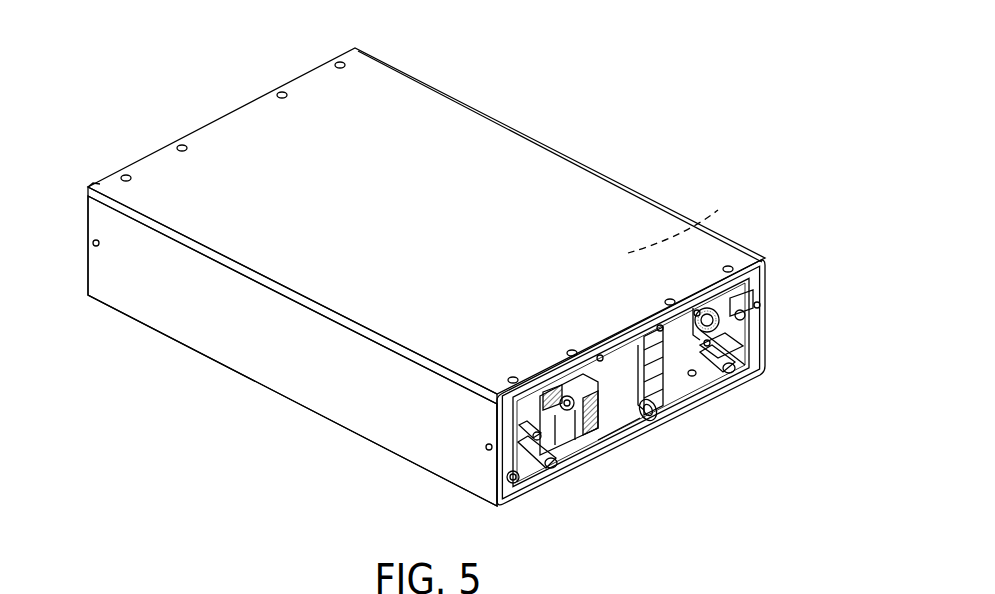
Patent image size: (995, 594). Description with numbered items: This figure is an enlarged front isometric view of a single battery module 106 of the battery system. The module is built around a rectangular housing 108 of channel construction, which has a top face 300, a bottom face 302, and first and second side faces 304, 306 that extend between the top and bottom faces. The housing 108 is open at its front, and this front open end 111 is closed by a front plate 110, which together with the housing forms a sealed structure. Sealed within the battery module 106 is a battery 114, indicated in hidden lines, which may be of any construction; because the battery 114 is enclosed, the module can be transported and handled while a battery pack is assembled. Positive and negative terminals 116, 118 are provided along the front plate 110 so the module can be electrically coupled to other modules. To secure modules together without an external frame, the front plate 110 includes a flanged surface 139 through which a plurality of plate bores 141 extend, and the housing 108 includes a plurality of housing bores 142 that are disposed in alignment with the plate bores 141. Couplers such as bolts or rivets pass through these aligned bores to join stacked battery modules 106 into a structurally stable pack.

The battery module 106 is at (690, 144).
The rectangular housing 108 is at (326, 363).
The front plate 110 is at (618, 377).
The front open end 111 is at (770, 373).
The battery 114 is at (695, 225).
The positive terminal 116 is at (743, 327).
The negative terminal 118 is at (588, 440).
The flanged surface 139 is at (703, 387).
The plate bore 141 is at (697, 310).
The housing bore 142 is at (338, 63).
The top face 300 is at (478, 145).
The bottom face 302 is at (672, 444).
The first side face 304 is at (167, 306).
The second side face 306 is at (782, 318).